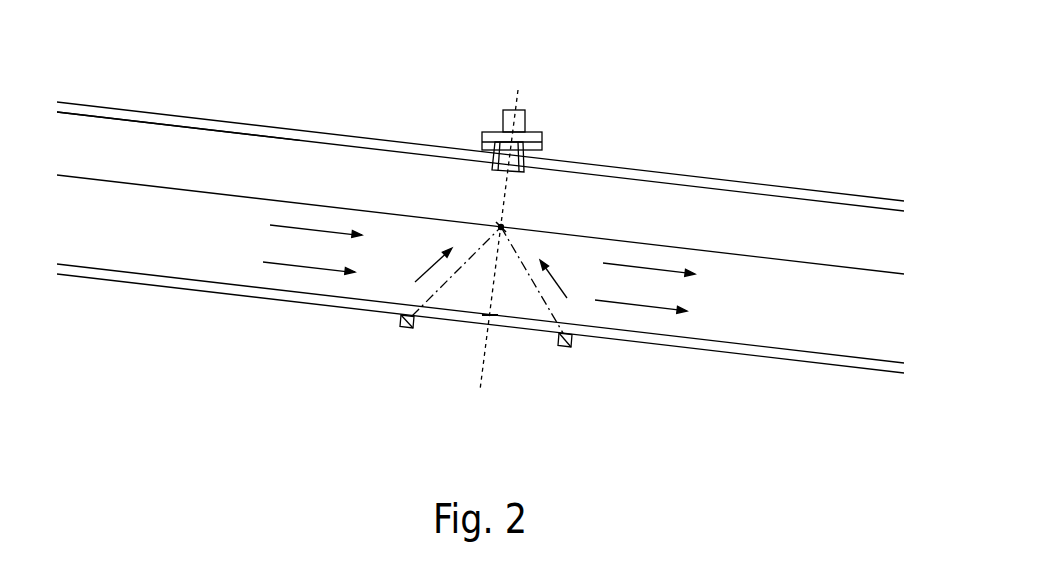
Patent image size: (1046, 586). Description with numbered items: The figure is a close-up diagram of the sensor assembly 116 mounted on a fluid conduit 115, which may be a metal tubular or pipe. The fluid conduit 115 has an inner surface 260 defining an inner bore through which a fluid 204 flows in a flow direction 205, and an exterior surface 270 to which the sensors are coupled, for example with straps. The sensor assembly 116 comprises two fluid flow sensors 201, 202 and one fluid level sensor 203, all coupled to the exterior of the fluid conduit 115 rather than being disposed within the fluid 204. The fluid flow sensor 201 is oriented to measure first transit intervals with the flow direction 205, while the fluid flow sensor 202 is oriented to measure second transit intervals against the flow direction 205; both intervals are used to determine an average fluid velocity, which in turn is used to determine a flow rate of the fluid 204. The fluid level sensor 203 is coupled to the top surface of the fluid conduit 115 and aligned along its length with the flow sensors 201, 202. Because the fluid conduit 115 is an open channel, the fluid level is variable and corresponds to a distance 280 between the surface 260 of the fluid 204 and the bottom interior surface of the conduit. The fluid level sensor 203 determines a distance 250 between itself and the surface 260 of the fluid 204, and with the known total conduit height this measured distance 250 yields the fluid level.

The fluid conduit 115 is at (480, 196).
The sensor assembly 116 is at (527, 92).
The fluid flow sensor 201 is at (407, 327).
The fluid flow sensor 202 is at (565, 347).
The fluid level sensor 203 is at (497, 128).
The fluid 204 is at (175, 250).
The flow direction 205 is at (318, 268).
The distance 250 is at (505, 195).
The inner surface 260 is at (648, 243).
The exterior surface 270 is at (263, 122).
The distance 280 is at (493, 288).